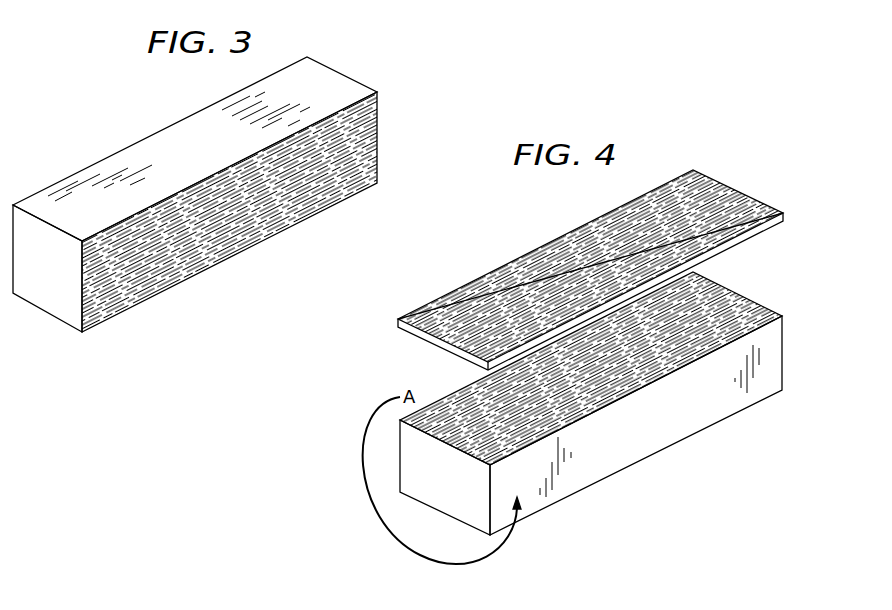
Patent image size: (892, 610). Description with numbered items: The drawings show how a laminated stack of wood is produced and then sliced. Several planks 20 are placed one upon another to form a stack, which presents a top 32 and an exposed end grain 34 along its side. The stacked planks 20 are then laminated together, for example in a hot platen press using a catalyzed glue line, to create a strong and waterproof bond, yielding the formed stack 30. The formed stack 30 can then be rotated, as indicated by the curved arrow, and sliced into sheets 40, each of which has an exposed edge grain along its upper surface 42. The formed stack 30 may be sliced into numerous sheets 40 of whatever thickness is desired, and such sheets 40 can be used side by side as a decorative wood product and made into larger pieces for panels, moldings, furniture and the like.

In FIG. 3, the planks 20 is at (367, 132).
In FIG. 3, the formed stack 30 is at (115, 122).
In FIG. 4, the formed stack 30 is at (744, 288).
In FIG. 3, the top 32 is at (70, 182).
In FIG. 3, the exposed end grain 34 is at (210, 240).
In FIG. 4, the sheets 40 is at (744, 188).
In FIG. 4, the upper surface 42 is at (555, 247).